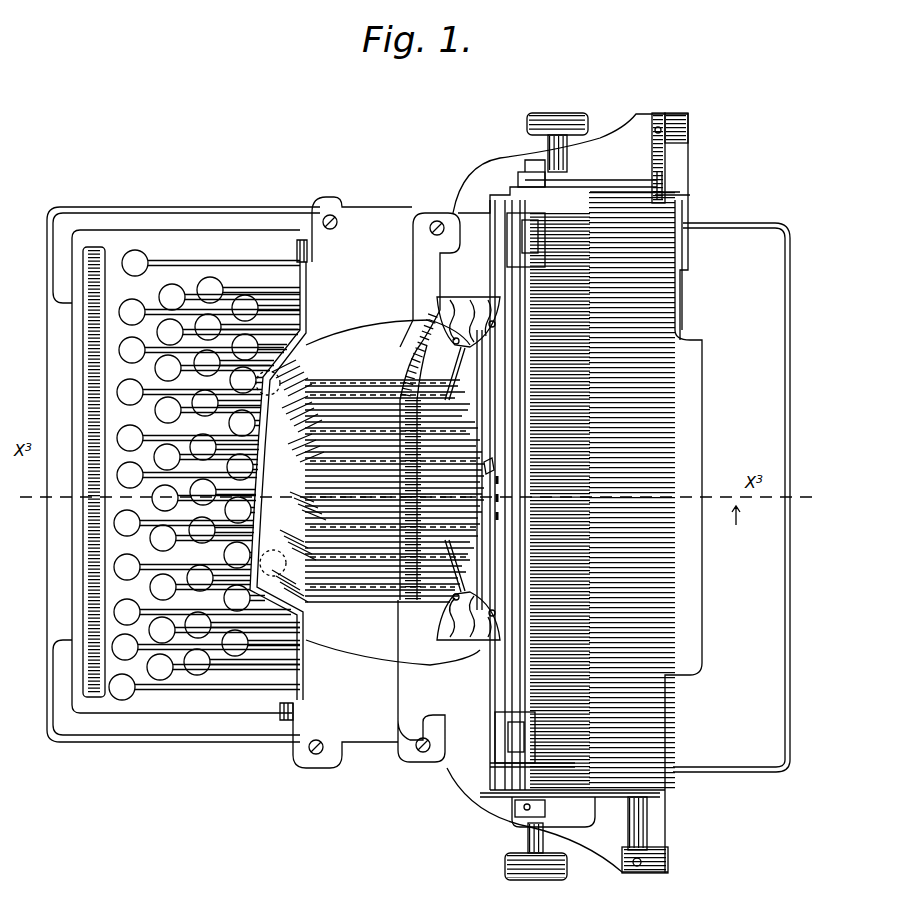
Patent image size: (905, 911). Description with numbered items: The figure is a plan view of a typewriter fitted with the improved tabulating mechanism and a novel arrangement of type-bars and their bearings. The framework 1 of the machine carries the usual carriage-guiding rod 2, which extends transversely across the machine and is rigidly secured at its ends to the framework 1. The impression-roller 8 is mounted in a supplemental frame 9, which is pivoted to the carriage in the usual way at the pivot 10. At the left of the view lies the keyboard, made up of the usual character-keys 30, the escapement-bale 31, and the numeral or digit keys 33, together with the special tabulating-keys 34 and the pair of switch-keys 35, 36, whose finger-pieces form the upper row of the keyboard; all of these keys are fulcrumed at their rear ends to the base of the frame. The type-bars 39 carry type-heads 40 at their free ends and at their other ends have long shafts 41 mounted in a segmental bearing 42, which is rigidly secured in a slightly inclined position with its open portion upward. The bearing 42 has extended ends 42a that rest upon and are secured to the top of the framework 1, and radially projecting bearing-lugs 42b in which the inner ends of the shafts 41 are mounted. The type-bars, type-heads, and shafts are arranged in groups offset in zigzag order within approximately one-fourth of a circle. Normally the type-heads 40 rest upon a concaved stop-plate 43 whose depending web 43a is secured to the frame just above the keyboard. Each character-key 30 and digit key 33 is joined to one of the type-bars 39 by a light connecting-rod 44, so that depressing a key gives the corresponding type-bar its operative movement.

The framework 1 is at (270, 212).
The carriage-guiding rod 2 is at (662, 160).
The impression-roller 8 is at (605, 297).
The supplemental frame 9 is at (590, 215).
The pivot 10 is at (672, 198).
The character-keys 30 is at (155, 410).
The escapement-bale 31 is at (82, 573).
The numeral or digit keys 33 is at (236, 392).
The special tabulating-keys 34 is at (226, 600).
The switch-key 35 is at (228, 471).
The switch-key 36 is at (228, 520).
The type-bars 39 is at (372, 432).
The type-heads 40 is at (318, 609).
The shafts 41 is at (478, 370).
The segmental bearing 42 is at (458, 297).
The extended ends 42a is at (428, 210).
The bearing-lugs 42b is at (494, 506).
The stop-plate 43 is at (276, 473).
The depending web 43a is at (303, 325).
The connecting-rod 44 is at (493, 455).